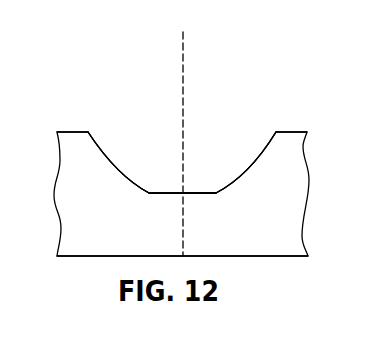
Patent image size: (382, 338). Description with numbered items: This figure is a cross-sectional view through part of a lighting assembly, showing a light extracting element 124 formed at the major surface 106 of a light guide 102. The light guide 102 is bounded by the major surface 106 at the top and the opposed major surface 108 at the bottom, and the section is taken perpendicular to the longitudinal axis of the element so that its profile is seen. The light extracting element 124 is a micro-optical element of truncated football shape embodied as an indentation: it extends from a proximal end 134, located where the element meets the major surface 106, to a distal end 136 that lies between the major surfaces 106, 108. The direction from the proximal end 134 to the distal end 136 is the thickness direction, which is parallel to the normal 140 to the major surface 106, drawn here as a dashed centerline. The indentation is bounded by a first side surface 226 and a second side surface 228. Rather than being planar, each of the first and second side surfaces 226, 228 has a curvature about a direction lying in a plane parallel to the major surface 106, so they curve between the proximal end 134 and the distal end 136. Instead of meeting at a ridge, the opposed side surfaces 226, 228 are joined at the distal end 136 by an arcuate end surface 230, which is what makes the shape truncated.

The light guide 102 is at (309, 182).
The major surface 106 is at (288, 133).
The major surface 108 is at (263, 257).
The light extracting element 124 is at (137, 129).
The proximal end 134 is at (89, 130).
The distal end 136 is at (199, 198).
The normal 140 is at (184, 117).
The first side surface 226 is at (110, 161).
The second side surface 228 is at (251, 167).
The arcuate end surface 230 is at (174, 194).